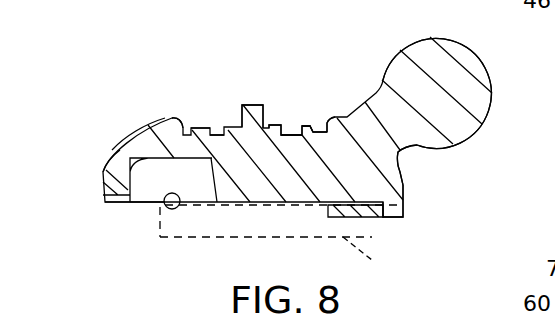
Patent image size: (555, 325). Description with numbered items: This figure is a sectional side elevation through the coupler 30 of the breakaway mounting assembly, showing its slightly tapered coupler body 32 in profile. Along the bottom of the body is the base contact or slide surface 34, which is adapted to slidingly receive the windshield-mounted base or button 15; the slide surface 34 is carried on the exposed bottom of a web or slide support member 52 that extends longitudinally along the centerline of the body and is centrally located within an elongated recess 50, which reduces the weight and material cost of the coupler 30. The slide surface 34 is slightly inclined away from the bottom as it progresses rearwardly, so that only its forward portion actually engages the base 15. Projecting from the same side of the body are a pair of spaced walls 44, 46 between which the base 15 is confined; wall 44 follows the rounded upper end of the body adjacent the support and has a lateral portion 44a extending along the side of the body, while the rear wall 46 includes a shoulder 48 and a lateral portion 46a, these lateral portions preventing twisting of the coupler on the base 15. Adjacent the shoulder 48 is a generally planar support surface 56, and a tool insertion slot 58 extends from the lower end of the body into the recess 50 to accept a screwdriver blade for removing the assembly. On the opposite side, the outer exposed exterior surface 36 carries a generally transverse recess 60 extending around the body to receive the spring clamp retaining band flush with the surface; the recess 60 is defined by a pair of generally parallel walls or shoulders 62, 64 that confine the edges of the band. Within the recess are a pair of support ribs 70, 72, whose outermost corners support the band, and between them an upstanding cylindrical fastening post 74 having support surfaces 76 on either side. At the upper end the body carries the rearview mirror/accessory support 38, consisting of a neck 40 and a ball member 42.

The base or button 15 is at (373, 255).
The coupler 30 is at (194, 65).
The coupler body 32 is at (136, 92).
The base contact or slide surface 34 is at (240, 203).
The exterior surface 36 is at (128, 111).
The rearview mirror/accessory support 38 is at (358, 51).
The neck 40 is at (398, 151).
The ball member 42 is at (415, 50).
The wall 44 is at (403, 207).
The lateral portion 44a is at (368, 219).
The rear wall 46 is at (162, 208).
The lateral portion 46a is at (163, 216).
The shoulder 48 is at (160, 206).
The elongated recess 50 is at (108, 175).
The web or slide support member 52 is at (212, 177).
The support surface 56 is at (192, 209).
The tool insertion slot 58 is at (107, 188).
The transverse recess 60 is at (298, 80).
The wall or shoulder 62 is at (323, 116).
The wall or shoulder 64 is at (182, 127).
The support rib 70 is at (313, 128).
The support rib 72 is at (205, 127).
The fastening post 74 is at (258, 107).
The support surface 76 is at (232, 122).